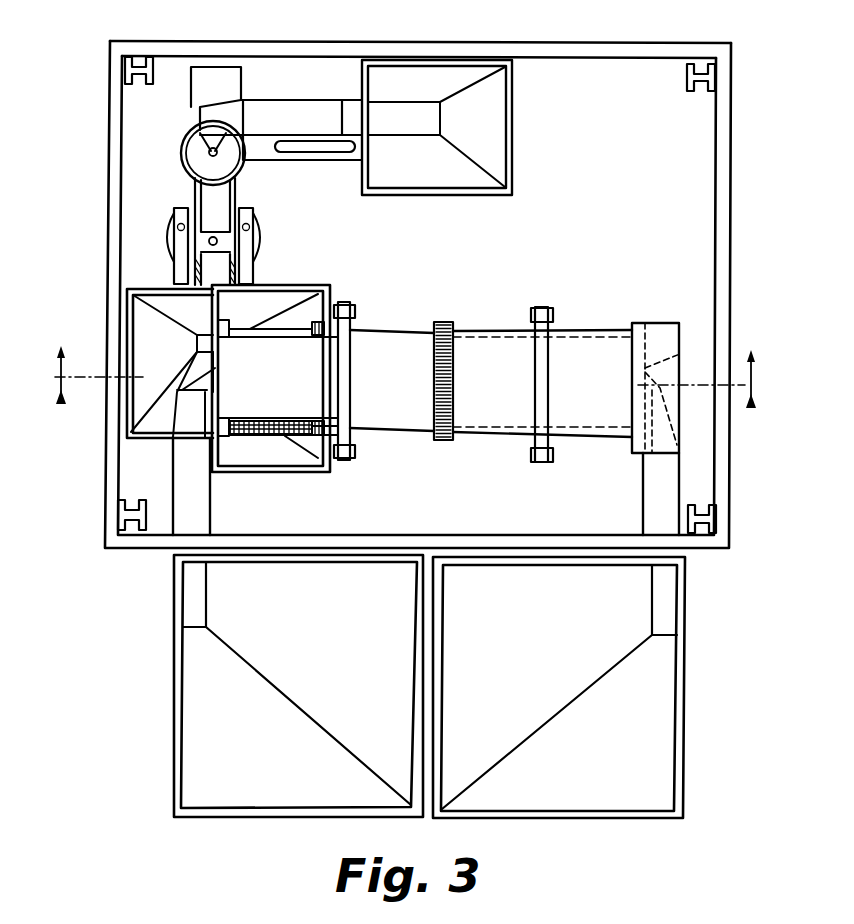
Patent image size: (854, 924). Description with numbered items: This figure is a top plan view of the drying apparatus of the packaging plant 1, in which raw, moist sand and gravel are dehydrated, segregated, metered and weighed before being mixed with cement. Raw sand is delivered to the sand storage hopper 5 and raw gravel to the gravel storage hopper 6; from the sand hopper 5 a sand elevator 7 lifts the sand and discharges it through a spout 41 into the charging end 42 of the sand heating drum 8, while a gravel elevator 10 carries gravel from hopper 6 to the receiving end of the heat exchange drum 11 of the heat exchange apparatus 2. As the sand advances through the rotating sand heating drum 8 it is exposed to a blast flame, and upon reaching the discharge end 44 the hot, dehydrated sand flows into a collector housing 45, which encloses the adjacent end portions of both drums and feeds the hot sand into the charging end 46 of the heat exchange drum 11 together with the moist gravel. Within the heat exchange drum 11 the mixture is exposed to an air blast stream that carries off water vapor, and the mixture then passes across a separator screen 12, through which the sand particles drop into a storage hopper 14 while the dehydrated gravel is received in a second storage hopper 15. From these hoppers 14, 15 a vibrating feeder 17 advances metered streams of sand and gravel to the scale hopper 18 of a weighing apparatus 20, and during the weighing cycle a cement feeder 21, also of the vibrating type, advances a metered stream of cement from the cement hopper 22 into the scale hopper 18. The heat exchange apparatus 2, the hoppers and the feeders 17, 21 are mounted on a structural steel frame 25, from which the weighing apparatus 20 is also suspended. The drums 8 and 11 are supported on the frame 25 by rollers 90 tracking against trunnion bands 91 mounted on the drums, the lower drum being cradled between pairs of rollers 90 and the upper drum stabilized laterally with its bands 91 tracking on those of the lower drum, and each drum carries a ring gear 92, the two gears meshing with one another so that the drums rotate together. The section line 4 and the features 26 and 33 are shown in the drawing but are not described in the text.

The packaging plant 1 is at (108, 594).
The heat exchange apparatus 2 is at (580, 328).
The section line 4 is at (402, 377).
The sand storage hopper 5 is at (176, 766).
The gravel storage hopper 6 is at (683, 757).
The sand elevator 7 is at (192, 517).
The sand heating drum 8 is at (387, 347).
The gravel elevator 10 is at (643, 516).
The heat exchange drum 11 is at (362, 330).
The separator screen 12 is at (242, 432).
The sand storage hopper 14 is at (310, 304).
The gravel storage hopper 15 is at (133, 315).
The vibrating feeder 17 is at (205, 270).
The scale hopper 18 is at (172, 241).
The weighing apparatus 20 is at (262, 267).
The cement feeder 21 is at (206, 190).
The cement hopper 22 is at (487, 123).
The structural steel frame 25 is at (262, 54).
The support block 26 is at (177, 225).
The housing 33 is at (105, 447).
The spout 41 is at (205, 388).
The charging end 42 is at (196, 362).
The discharge end 44 is at (655, 330).
The collector housing 45 is at (681, 352).
The charging end 46 is at (662, 362).
The rollers 90 is at (350, 302).
The trunnion bands 91 is at (346, 385).
The ring gear 92 is at (455, 378).